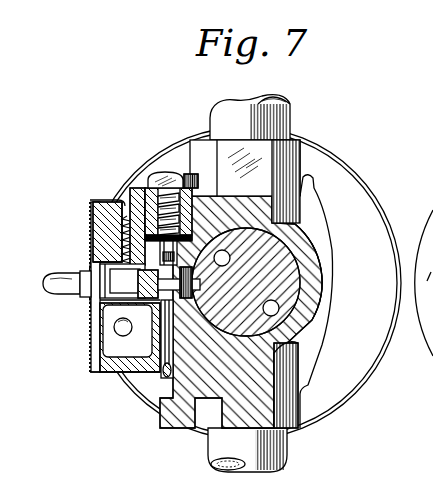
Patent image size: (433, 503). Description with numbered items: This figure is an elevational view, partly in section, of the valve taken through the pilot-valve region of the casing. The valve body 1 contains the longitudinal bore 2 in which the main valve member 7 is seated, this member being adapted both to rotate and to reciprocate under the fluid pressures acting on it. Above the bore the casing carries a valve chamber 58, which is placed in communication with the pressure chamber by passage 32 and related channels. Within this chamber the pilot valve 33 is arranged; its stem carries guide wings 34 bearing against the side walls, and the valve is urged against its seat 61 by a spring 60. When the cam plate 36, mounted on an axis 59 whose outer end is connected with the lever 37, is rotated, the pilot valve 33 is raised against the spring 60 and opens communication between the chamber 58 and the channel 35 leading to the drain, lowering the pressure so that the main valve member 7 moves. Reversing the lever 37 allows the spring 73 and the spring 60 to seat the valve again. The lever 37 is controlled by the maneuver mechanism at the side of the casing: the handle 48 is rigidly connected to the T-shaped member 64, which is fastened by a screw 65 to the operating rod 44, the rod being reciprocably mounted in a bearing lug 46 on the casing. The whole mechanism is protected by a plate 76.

The valve body 1 is at (323, 218).
The longitudinal bore 2 is at (299, 302).
The main valve member 7 is at (283, 273).
The passage 32 is at (243, 191).
The pilot valve 33 is at (147, 186).
The guide wings 34 is at (128, 214).
The channel 35 is at (166, 340).
The cam plate 36 is at (96, 340).
The lever 37 is at (92, 243).
The operating rod 44 is at (123, 337).
The bearing lug 46 is at (138, 300).
The handle 48 is at (65, 287).
The valve chamber 58 is at (184, 174).
The axis 59 is at (112, 298).
The spring 60 is at (163, 172).
The seat 61 is at (141, 196).
The T-shaped member 64 is at (120, 267).
The screw 65 is at (98, 346).
The spring 73 is at (116, 228).
The plate 76 is at (90, 215).